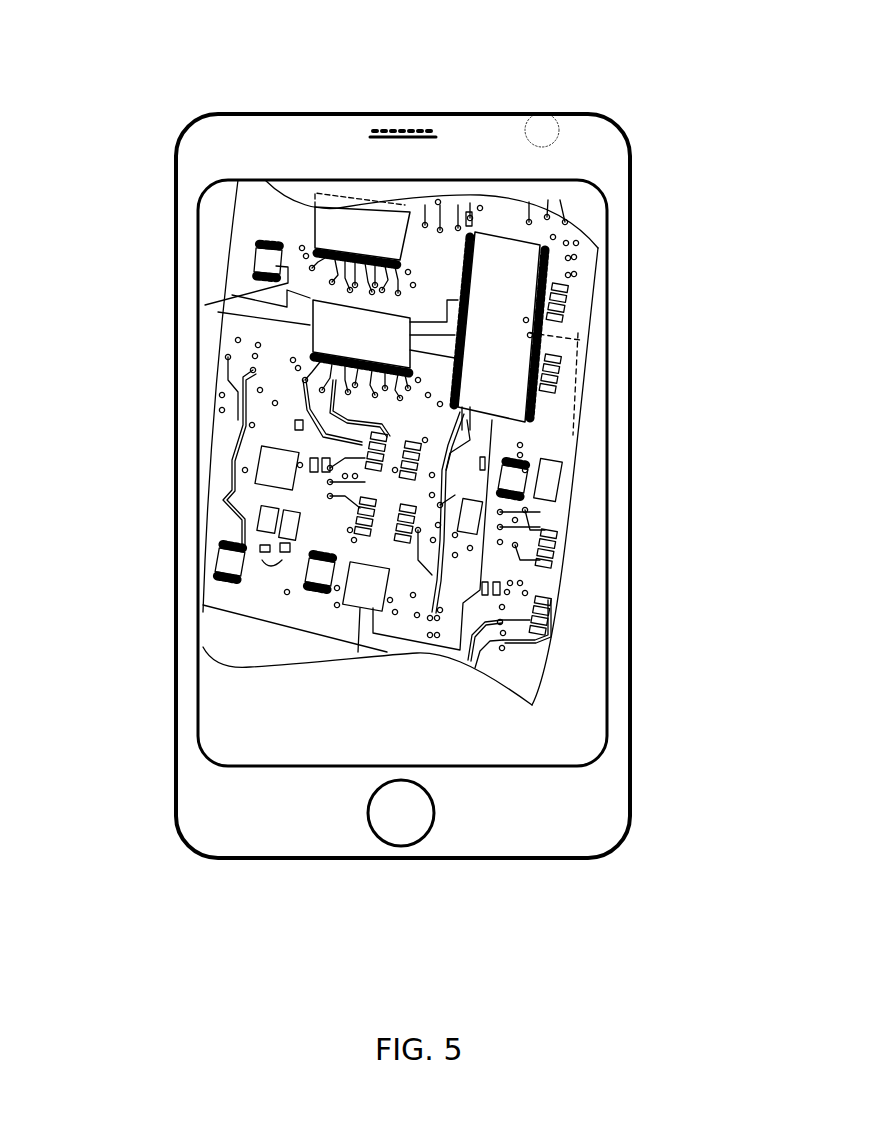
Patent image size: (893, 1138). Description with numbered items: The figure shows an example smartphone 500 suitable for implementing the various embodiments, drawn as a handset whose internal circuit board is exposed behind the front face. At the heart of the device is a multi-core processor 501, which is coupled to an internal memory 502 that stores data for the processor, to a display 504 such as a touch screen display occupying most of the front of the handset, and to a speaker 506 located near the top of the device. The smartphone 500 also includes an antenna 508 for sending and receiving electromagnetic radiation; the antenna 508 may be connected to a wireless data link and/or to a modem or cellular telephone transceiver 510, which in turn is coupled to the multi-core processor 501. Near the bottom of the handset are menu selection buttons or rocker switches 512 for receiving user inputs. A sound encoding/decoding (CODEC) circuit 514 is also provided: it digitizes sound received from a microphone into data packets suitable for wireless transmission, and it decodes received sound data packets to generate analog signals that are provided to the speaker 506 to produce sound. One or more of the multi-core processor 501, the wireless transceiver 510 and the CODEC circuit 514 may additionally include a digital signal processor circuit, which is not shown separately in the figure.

The smartphone 500 is at (740, 62).
The multi-core processor 501 is at (355, 328).
The internal memory 502 is at (512, 347).
The display 504 is at (587, 708).
The speaker 506 is at (370, 125).
The antenna 508 is at (537, 115).
The cellular telephone transceiver 510 is at (330, 230).
The menu selection buttons or rocker switches 512 is at (395, 830).
The sound encoding/decoding (CODEC) circuit 514 is at (262, 272).